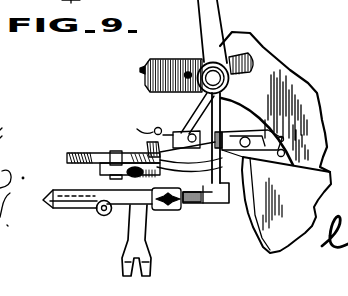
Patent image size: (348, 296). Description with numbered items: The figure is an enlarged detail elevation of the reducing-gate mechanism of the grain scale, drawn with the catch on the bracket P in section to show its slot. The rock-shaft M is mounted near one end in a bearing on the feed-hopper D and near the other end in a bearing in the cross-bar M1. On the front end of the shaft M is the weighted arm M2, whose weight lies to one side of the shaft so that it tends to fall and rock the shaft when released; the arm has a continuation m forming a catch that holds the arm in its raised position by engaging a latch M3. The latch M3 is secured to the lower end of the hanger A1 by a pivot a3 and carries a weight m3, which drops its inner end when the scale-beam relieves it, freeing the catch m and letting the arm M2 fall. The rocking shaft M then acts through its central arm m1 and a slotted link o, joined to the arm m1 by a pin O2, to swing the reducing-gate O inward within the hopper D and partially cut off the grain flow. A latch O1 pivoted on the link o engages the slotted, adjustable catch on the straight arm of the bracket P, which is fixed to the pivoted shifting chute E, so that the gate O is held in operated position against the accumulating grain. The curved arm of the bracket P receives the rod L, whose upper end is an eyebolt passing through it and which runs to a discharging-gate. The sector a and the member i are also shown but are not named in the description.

The feed-hopper D is at (310, 92).
The shifting chute E is at (269, 201).
The sector arm a is at (257, 109).
The rock-shaft M is at (202, 65).
The cross-bar M1 is at (140, 69).
The weighted arm M2 is at (217, 13).
The latch M3 is at (202, 205).
The latch weight m3 is at (164, 209).
The pivot a3 is at (96, 217).
The hanger A1 is at (47, 231).
The leg i is at (130, 235).
The rod L is at (148, 267).
The reducing-gate O is at (158, 131).
The latch O1 is at (133, 127).
The pin O2 is at (183, 128).
The catch m is at (215, 118).
The arm m1 is at (210, 99).
The link o is at (268, 137).
The bracket P is at (98, 158).